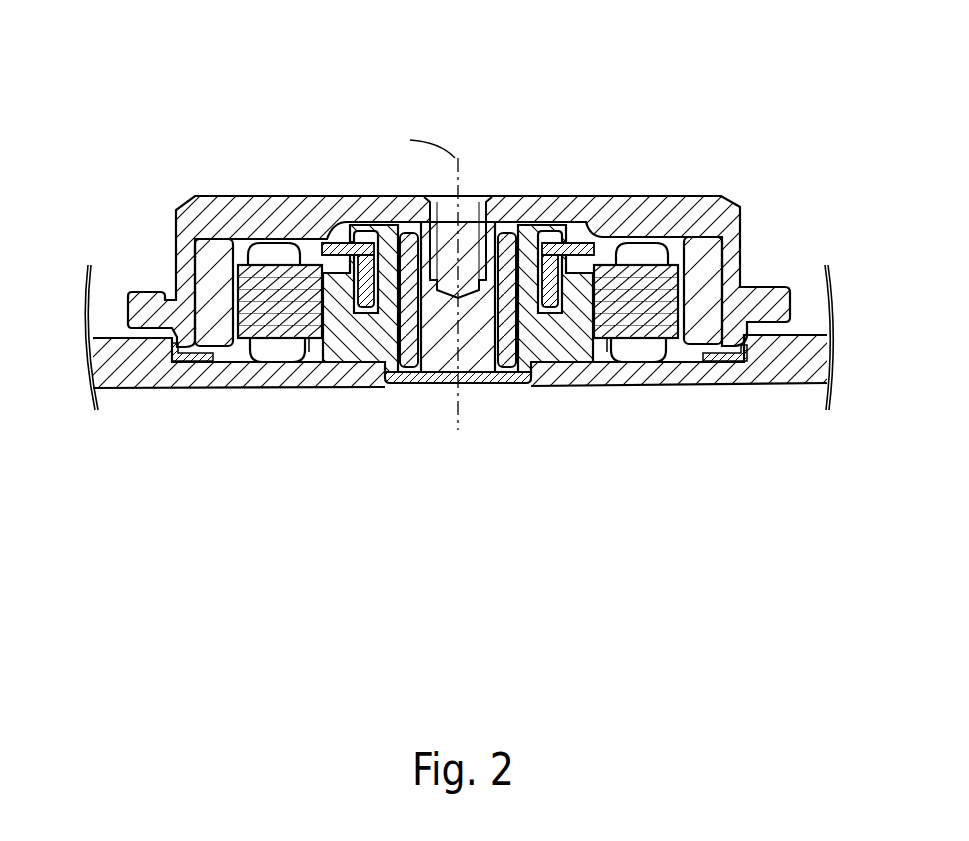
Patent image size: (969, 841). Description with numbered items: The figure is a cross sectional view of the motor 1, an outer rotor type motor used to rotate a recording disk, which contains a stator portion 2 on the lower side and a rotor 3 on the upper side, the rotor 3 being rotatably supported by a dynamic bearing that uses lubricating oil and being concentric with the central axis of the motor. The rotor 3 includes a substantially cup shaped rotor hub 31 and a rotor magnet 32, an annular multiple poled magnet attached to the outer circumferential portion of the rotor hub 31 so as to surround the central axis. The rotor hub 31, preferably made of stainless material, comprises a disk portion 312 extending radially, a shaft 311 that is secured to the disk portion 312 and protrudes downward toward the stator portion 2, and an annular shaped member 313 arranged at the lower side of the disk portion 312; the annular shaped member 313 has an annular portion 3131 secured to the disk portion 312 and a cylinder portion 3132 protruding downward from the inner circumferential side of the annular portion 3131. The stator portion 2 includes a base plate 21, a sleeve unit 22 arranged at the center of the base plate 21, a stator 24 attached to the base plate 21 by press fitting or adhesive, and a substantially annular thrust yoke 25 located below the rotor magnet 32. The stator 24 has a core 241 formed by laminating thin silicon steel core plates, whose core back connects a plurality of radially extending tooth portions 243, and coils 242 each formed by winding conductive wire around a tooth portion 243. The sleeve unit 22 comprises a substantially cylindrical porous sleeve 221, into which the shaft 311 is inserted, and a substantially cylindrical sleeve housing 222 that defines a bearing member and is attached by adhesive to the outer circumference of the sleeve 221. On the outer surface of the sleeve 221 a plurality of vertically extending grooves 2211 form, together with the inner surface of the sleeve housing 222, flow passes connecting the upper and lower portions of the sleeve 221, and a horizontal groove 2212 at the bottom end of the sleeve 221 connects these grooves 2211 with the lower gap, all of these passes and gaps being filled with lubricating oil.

The motor 1 is at (198, 170).
The stator portion 2 is at (148, 523).
The base plate 21 is at (119, 370).
The sleeve unit 22 is at (402, 490).
The sleeve 221 is at (410, 367).
The grooves 2211 is at (462, 373).
The horizontal groove 2212 is at (506, 378).
The sleeve housing 222 is at (387, 372).
The stator 24 is at (250, 487).
The core 241 is at (313, 358).
The coils 242 is at (285, 335).
The tooth portions 243 is at (275, 347).
The thrust yoke 25 is at (183, 362).
The rotor 3 is at (787, 90).
The rotor hub 31 is at (605, 82).
The shaft 311 is at (493, 207).
The disk portion 312 is at (521, 212).
The annular shaped member 313 is at (654, 140).
The annular portion 3131 is at (580, 240).
The cylinder portion 3132 is at (592, 252).
The rotor magnet 32 is at (705, 300).